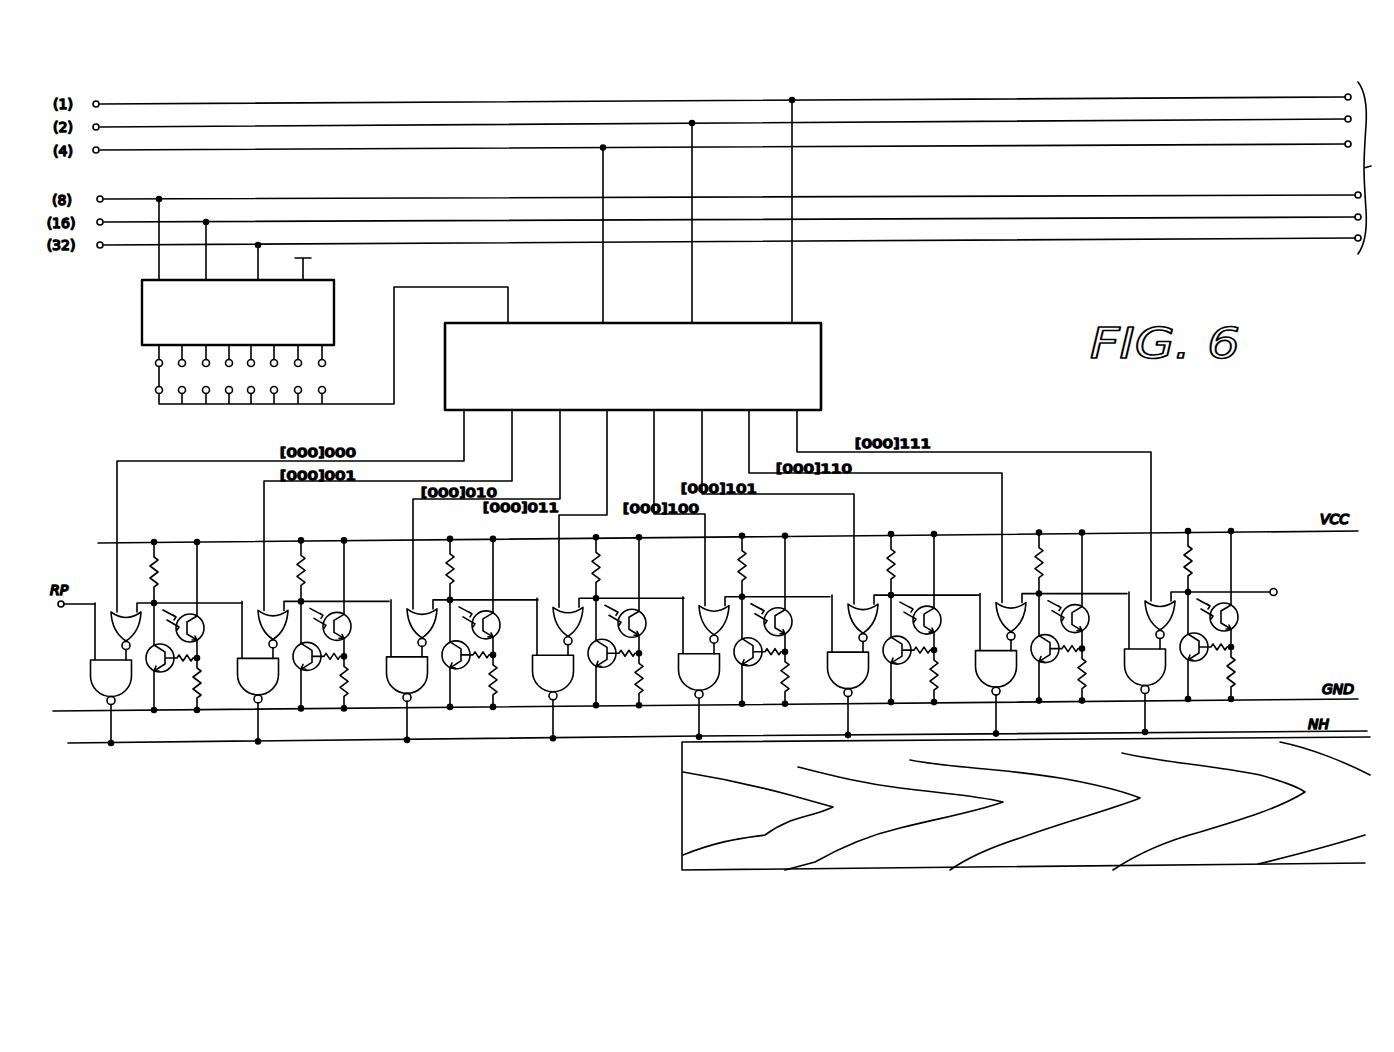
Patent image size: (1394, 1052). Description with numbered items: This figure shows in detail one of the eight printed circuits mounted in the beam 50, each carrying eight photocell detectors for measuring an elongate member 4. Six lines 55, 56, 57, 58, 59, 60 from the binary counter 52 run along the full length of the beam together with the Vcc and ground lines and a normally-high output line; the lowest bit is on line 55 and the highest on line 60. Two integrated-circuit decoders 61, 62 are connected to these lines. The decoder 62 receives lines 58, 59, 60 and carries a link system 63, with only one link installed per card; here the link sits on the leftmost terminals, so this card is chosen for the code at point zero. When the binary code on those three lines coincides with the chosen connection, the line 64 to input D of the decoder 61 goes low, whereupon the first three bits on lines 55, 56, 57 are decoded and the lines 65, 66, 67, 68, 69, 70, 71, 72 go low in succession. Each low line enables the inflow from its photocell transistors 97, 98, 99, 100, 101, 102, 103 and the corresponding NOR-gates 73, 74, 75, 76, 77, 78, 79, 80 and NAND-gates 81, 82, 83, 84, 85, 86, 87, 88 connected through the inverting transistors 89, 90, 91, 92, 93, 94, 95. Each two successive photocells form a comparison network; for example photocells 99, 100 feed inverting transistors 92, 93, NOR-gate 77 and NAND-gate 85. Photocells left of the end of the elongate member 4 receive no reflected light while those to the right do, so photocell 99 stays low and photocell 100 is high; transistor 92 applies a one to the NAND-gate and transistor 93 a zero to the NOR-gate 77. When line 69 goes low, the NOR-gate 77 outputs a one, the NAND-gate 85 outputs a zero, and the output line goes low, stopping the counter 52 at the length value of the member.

The elongate member 4 is at (918, 853).
The beam 50 is at (385, 754).
The binary counter 52 is at (1374, 168).
The counter line (lowest bit) 55 is at (1272, 97).
The counter line (second bit) 56 is at (1203, 122).
The counter line (third bit) 57 is at (1136, 146).
The counter line (fourth bit) 58 is at (1020, 195).
The counter line (fifth bit) 59 is at (925, 218).
The counter line (highest bit) 60 is at (850, 241).
The decoder 61 is at (800, 358).
The decoder 62 is at (323, 297).
The link system 63 is at (146, 364).
The line connecting decoder 62 with decoder 61 64 is at (153, 401).
The decoder output line 65 is at (302, 461).
The decoder output line 66 is at (312, 482).
The decoder output line 67 is at (472, 497).
The decoder output line 68 is at (559, 522).
The decoder output line 69 is at (708, 522).
The decoder output line 70 is at (854, 505).
The decoder output line 71 is at (1002, 497).
The decoder output line 72 is at (1151, 487).
The NOR-gate 73 is at (125, 623).
The NOR-gate 74 is at (275, 613).
The NOR-gate 75 is at (424, 612).
The NOR-gate 76 is at (570, 610).
The NOR-gate 77 is at (716, 609).
The NOR-gate 78 is at (865, 607).
The NOR-gate 79 is at (1013, 606).
The NOR-gate 80 is at (1162, 604).
The NAND-gate 81 is at (100, 680).
The NAND-gate 82 is at (244, 671).
The NAND-gate 83 is at (393, 670).
The NAND-gate 84 is at (539, 668).
The NAND-gate 85 is at (685, 667).
The NAND-gate 86 is at (834, 665).
The NAND-gate 87 is at (982, 664).
The NAND-gate 88 is at (1131, 662).
The inverting transistor 89 is at (152, 669).
The inverting transistor 90 is at (311, 672).
The inverting transistor 91 is at (460, 671).
The inverting transistor 92 is at (606, 669).
The inverting transistor 93 is at (752, 668).
The inverting transistor 94 is at (901, 666).
The inverting transistor 95 is at (1049, 665).
The photocell transistor 97 is at (343, 629).
The photocell transistor 98 is at (492, 628).
The photocell 99 is at (638, 626).
The photocell 100 is at (789, 625).
The photocell transistor 101 is at (938, 623).
The photocell transistor 102 is at (1086, 622).
The photocell transistor 103 is at (1244, 619).